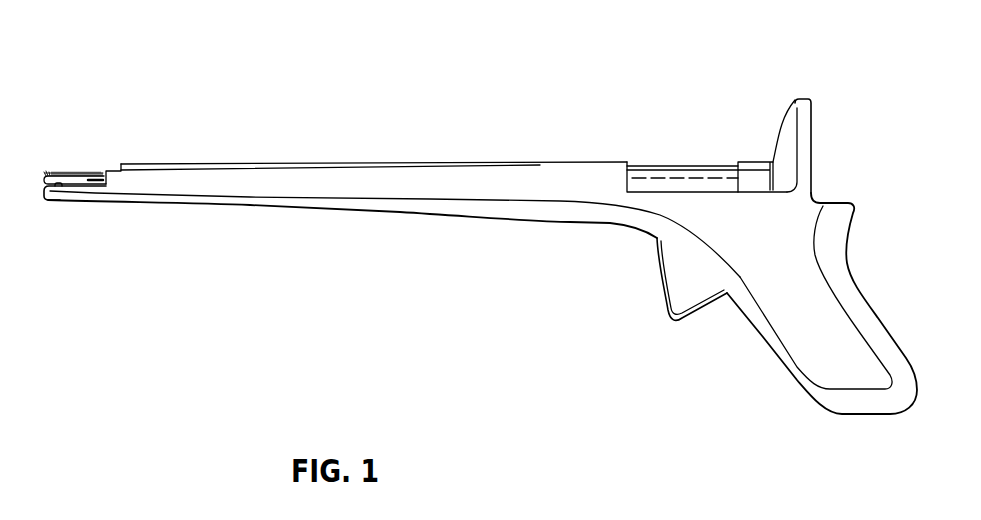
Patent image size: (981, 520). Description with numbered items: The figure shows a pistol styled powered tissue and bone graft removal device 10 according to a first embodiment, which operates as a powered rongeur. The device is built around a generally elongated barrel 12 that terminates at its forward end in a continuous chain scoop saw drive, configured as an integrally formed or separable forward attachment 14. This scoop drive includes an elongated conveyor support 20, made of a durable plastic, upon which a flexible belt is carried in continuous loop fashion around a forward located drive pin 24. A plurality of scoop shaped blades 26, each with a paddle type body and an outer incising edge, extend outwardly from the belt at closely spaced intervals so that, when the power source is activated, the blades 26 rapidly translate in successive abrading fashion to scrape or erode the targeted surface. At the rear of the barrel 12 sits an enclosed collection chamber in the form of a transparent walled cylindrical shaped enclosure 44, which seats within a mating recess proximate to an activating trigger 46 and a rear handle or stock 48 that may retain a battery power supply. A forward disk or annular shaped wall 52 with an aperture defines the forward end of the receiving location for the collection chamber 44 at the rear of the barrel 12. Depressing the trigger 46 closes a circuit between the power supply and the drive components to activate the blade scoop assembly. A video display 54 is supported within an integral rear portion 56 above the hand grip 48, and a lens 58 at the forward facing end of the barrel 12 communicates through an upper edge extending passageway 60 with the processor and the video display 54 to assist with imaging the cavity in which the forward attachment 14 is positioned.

The pistol styled powered tissue and bone graft removal device 10 is at (410, 100).
The elongated barrel 12 is at (371, 205).
The forward attachment 14 is at (68, 204).
The elongated conveyor support 20 is at (89, 184).
The forward drive pin 24 is at (58, 192).
The scoop shaped blades 26 is at (64, 173).
The cylindrical shaped enclosure 44 is at (683, 172).
The activating trigger 46 is at (666, 318).
The rear handle or stock 48 is at (782, 368).
The forward disk or annular shaped wall 52 is at (632, 170).
The video display 54 is at (813, 120).
The integral rear portion 56 is at (783, 142).
The lens 58 is at (118, 165).
The upper edge extending passageway 60 is at (186, 163).